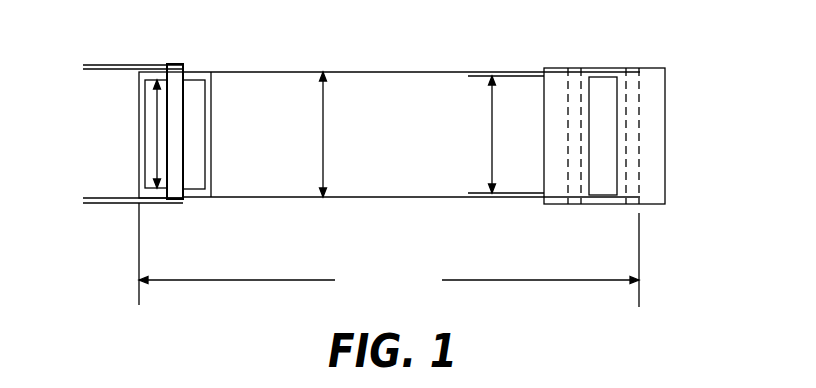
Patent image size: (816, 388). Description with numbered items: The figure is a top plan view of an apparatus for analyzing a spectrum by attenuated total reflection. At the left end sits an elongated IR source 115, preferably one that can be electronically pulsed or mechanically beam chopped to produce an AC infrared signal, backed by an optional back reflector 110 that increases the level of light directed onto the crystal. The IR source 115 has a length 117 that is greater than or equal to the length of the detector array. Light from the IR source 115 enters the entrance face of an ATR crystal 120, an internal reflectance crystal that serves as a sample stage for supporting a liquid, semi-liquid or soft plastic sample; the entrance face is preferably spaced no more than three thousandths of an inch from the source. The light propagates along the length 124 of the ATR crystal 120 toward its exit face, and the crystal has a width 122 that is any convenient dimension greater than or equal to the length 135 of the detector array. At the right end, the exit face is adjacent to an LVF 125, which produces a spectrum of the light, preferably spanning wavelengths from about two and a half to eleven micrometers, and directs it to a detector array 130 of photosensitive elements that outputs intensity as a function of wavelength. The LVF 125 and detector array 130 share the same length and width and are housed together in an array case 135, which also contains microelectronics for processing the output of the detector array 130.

The back reflector 110 is at (144, 102).
The IR source 115 is at (183, 103).
The length of IR source 117 is at (157, 148).
The ATR crystal 120 is at (368, 72).
The width of ATR crystal 122 is at (324, 134).
The length of ATR crystal 124 is at (389, 255).
The LVF 125 is at (626, 120).
The detector array 130 is at (618, 150).
The array case 135 is at (605, 205).